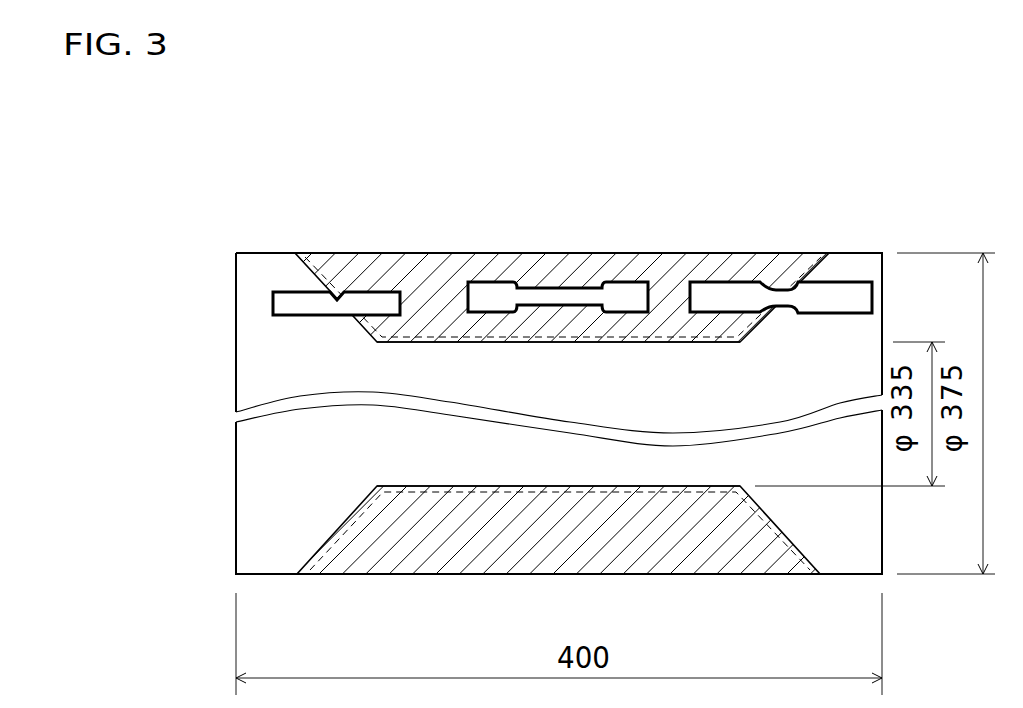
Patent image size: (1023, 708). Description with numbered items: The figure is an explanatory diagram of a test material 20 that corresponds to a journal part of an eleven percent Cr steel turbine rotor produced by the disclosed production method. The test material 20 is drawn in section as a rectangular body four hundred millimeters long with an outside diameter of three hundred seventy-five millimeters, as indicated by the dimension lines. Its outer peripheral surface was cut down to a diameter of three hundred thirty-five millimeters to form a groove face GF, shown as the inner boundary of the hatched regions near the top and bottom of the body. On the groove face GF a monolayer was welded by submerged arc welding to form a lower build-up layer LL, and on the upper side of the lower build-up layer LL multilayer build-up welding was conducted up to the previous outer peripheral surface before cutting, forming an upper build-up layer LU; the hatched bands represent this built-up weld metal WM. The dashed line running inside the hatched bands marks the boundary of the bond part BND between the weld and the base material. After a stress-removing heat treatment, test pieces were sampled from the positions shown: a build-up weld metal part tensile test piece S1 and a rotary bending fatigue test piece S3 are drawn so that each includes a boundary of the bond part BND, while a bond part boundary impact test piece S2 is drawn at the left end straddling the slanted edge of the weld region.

The test material 20 is at (305, 148).
The wall member WM is at (430, 249).
The groove face GF is at (660, 337).
The bond part BND is at (360, 328).
The upper build-up layer LU is at (377, 342).
The lower build-up layer LL is at (453, 486).
The build-up weld metal part tensile test piece S1 is at (540, 295).
The bond part boundary impact test piece S2 is at (291, 302).
The rotary bending fatigue test piece S3 is at (833, 300).